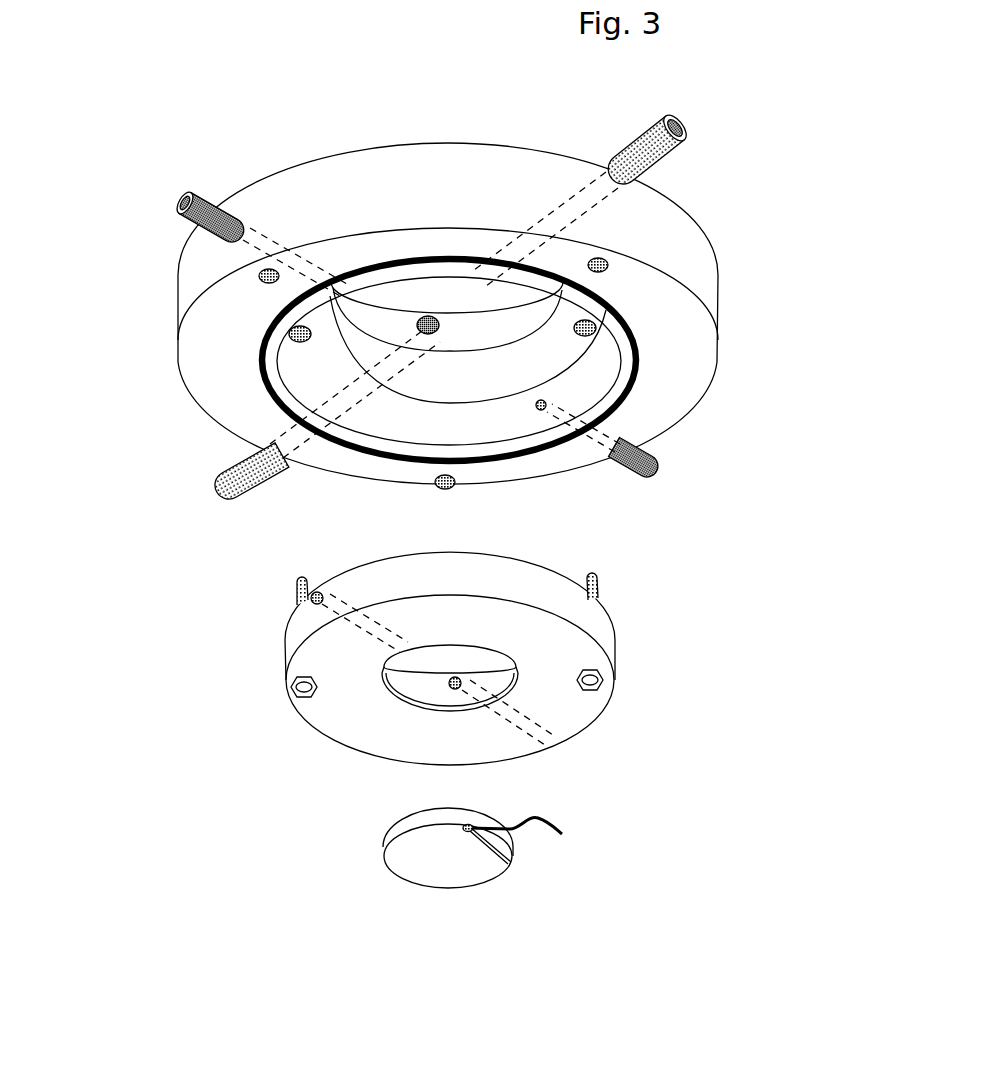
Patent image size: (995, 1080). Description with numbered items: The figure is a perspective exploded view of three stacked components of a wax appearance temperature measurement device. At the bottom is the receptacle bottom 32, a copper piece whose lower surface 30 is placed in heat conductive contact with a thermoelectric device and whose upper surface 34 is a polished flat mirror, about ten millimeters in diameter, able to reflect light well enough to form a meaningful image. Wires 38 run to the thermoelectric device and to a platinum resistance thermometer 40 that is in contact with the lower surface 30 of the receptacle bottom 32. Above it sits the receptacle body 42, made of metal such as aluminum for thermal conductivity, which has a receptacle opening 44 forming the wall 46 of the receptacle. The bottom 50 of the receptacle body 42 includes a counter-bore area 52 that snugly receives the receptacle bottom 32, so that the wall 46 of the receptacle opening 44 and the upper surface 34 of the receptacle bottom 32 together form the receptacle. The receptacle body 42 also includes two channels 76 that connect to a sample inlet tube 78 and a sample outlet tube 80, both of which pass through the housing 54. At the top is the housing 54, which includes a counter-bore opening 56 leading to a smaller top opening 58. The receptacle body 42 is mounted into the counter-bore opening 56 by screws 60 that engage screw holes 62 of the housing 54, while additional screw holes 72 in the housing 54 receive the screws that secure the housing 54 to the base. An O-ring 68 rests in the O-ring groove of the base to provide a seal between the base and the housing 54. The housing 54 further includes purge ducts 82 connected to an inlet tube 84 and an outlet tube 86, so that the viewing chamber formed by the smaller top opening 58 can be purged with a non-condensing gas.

The lower surface 30 is at (407, 865).
The receptacle bottom 32 is at (386, 840).
The upper surface 34 is at (433, 808).
The wires 38 is at (563, 824).
The platinum resistance thermometer 40 is at (510, 863).
The receptacle body 42 is at (617, 657).
The receptacle opening 44 is at (447, 660).
The wall 46 is at (410, 683).
The bottom 50 is at (400, 743).
The counter-bore area 52 is at (400, 706).
The housing 54 is at (716, 308).
The counter-bore opening 56 is at (593, 387).
The smaller top opening 58 is at (430, 293).
The screws 60 is at (598, 693).
The screw holes 62 is at (598, 338).
The O-ring 68 is at (445, 257).
The screw holes 72 is at (608, 265).
The channels 76 is at (360, 630).
The sample inlet tube 78 is at (180, 200).
The sample outlet tube 80 is at (665, 470).
The purge ducts 82 is at (568, 212).
The inlet tube 84 is at (210, 490).
The outlet tube 86 is at (688, 128).